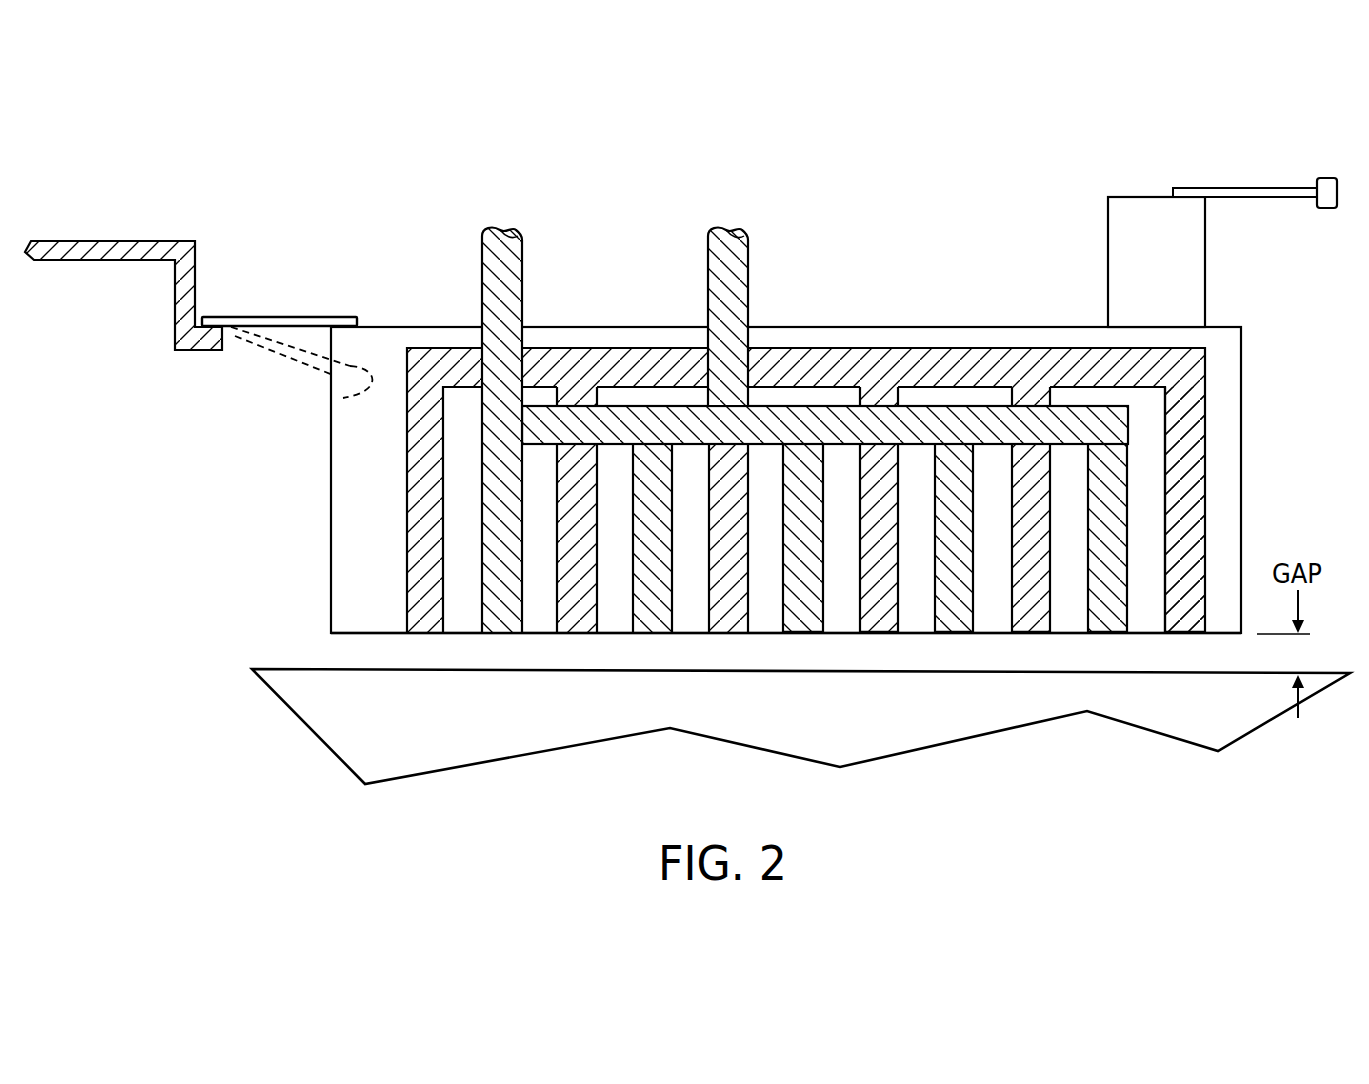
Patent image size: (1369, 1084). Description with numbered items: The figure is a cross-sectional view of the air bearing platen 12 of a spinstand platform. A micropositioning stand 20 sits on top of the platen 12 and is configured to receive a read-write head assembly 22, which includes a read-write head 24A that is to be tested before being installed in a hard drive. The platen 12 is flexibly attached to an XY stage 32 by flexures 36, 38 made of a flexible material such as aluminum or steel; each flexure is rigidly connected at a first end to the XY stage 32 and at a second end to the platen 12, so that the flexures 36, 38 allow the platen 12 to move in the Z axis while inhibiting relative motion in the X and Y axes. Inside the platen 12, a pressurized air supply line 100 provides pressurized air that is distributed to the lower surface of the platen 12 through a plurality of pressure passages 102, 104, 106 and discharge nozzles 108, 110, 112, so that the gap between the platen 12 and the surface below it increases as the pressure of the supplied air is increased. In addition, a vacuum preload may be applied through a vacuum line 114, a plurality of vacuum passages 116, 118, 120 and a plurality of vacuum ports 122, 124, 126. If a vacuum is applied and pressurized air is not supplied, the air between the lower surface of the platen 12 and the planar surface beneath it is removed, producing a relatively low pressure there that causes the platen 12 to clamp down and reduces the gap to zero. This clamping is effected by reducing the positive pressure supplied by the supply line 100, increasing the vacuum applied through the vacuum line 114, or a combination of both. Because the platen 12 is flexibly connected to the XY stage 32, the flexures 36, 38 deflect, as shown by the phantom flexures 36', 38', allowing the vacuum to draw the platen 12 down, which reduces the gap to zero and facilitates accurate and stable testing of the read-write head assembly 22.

The platen 12 is at (331, 447).
The micropositioning stand 20 is at (1108, 258).
The read-write head assembly 22 is at (1175, 188).
The read-write head 24A is at (1326, 208).
The XY stage 32 is at (200, 277).
The flexure 36 is at (292, 294).
The flexure 38 is at (292, 294).
The phantom flexure 36' is at (301, 371).
The phantom flexure 38' is at (301, 371).
The pressurized air supply line 100 is at (708, 277).
The vacuum line 114 is at (481, 277).
The pressure passage 102 is at (855, 522).
The pressure passage 104 is at (1005, 522).
The pressure passage 106 is at (1160, 522).
The vacuum passage 116 is at (783, 590).
The vacuum passage 118 is at (930, 590).
The vacuum passage 120 is at (1083, 590).
The discharge nozzle 108 is at (877, 638).
The discharge nozzle 110 is at (1032, 638).
The discharge nozzle 112 is at (1185, 638).
The vacuum port 122 is at (805, 637).
The vacuum port 124 is at (955, 638).
The vacuum port 126 is at (1108, 638).